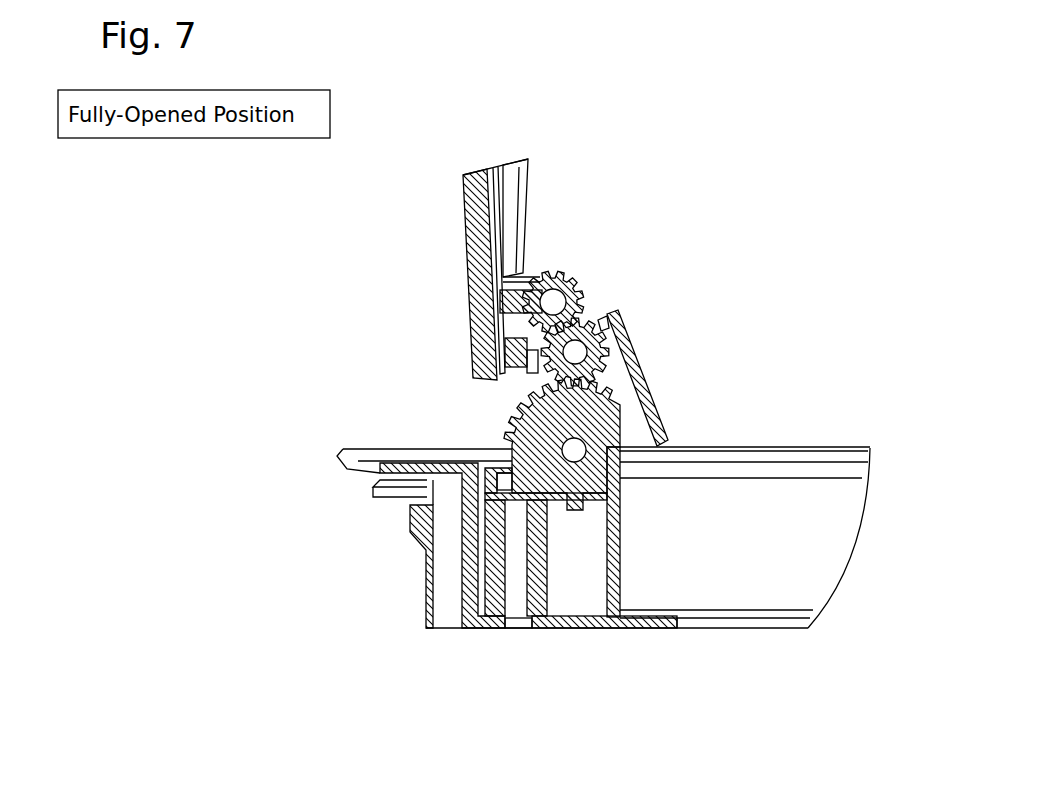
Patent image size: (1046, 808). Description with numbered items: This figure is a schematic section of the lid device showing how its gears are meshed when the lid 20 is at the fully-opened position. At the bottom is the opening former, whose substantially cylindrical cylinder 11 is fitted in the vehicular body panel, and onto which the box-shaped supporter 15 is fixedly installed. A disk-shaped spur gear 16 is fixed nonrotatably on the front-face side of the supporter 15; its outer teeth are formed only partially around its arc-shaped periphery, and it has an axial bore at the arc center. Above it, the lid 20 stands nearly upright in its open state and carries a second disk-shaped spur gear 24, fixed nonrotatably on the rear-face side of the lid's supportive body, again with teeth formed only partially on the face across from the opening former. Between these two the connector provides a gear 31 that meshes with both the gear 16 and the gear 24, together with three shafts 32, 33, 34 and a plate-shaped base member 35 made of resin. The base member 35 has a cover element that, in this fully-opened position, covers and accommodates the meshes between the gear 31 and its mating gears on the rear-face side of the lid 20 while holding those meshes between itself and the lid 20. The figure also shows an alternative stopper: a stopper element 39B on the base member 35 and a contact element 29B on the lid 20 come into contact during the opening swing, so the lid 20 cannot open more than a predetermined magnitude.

The cylinder 11 is at (463, 605).
The supporter 15 is at (547, 560).
The gear 16 is at (623, 498).
The lid 20 is at (466, 191).
The gear 24 is at (578, 287).
The contact element 29B is at (512, 373).
The gear 31 is at (620, 327).
The shaft 32 is at (577, 512).
The shaft 33 is at (583, 292).
The shaft 34 is at (605, 348).
The base member 35 is at (657, 412).
The stopper element 39B is at (524, 368).